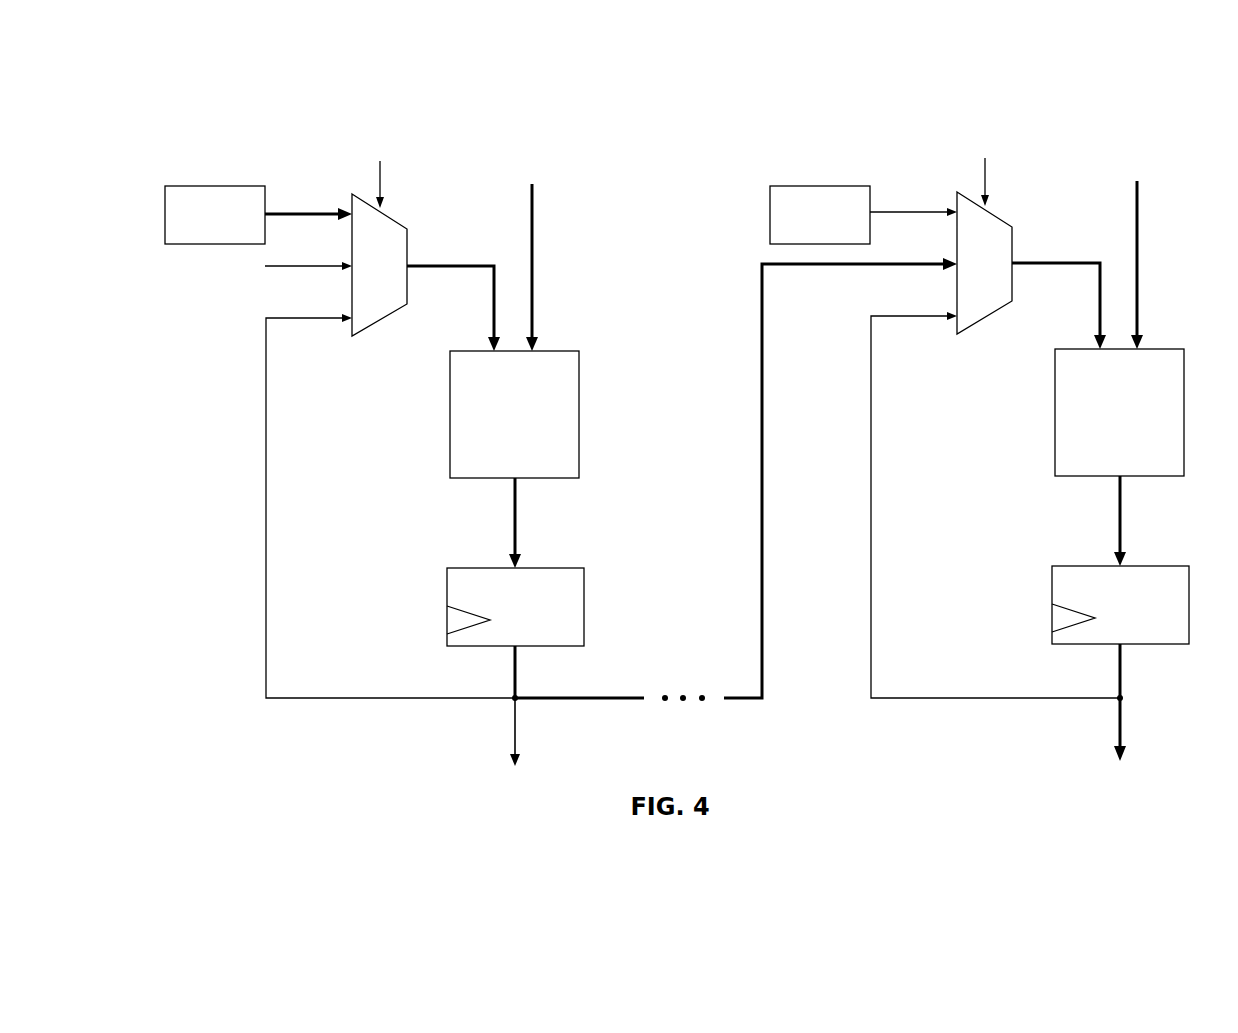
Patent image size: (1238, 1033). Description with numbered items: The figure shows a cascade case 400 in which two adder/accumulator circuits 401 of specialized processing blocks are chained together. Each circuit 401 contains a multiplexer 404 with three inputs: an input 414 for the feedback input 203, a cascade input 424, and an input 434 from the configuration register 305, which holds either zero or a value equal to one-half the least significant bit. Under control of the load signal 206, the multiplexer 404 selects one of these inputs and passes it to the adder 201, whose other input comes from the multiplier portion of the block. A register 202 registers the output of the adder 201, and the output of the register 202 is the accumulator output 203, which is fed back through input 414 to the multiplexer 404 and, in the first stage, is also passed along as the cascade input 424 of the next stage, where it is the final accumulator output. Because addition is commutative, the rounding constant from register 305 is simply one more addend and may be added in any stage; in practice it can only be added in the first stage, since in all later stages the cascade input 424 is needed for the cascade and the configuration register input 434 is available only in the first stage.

The cascade operation case 400 is at (170, 50).
The adder/accumulator circuit 401 is at (637, 110).
The configuration register 305 is at (212, 184).
The configuration register input 434 is at (306, 211).
The cascade input 424 is at (308, 264).
The feedback input 414 is at (305, 319).
The load signal 206 is at (381, 184).
The multiplexer 404 is at (407, 246).
The adder 201 is at (552, 349).
The register 202 is at (548, 566).
The accumulator output 203 is at (516, 731).